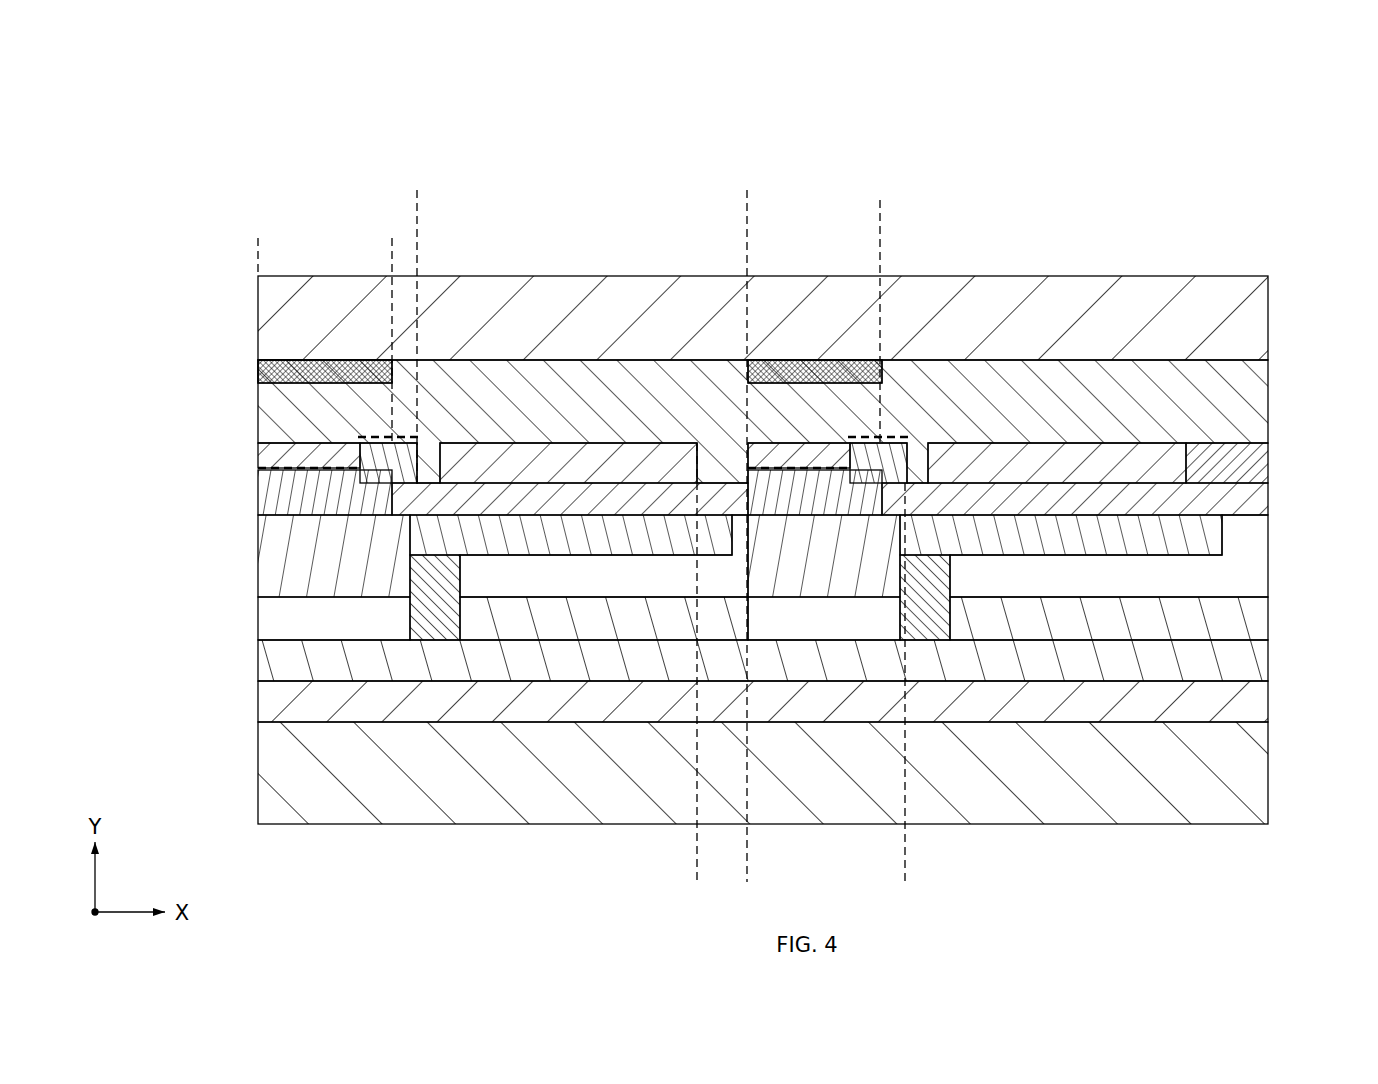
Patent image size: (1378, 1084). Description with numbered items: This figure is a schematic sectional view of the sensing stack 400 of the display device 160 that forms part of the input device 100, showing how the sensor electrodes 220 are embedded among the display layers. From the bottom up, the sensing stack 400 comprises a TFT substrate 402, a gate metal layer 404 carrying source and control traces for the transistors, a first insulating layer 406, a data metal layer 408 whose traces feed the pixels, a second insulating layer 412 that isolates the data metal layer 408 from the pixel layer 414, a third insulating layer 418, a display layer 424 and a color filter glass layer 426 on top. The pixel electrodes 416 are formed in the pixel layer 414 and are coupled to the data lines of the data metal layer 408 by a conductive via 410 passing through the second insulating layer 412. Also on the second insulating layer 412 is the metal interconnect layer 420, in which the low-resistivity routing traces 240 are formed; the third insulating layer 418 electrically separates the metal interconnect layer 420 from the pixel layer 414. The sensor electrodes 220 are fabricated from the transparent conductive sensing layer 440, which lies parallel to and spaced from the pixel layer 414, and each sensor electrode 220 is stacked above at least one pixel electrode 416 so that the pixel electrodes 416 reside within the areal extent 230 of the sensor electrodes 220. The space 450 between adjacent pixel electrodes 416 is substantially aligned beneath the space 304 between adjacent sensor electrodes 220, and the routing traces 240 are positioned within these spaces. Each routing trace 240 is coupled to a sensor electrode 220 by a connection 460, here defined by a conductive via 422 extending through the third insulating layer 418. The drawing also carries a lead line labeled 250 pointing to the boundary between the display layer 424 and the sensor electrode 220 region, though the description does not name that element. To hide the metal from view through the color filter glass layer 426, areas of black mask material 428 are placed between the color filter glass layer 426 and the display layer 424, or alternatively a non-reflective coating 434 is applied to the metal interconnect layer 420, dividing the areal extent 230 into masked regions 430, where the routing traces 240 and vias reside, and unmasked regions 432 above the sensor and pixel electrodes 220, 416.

The input device 100 is at (148, 165).
The display device 160 is at (1198, 163).
The routing traces 240 is at (372, 138).
The areal extent 230 is at (417, 197).
The unmasked regions 432 is at (747, 229).
The masked regions 430 is at (258, 245).
The interface 250 is at (1131, 443).
The sensing stack 400 is at (172, 320).
The color filter glass layer 426 is at (1262, 319).
The black mask material 428 is at (262, 372).
The display layer 424 is at (1262, 386).
The non-reflective coating 434 is at (270, 455).
The conductive via 422 is at (368, 440).
The connection 460 is at (418, 482).
The conductive sensing layer 440 is at (1178, 460).
The metal interconnect layer 420 is at (260, 484).
The sensor electrodes 220 is at (557, 474).
The third insulating layer 418 is at (1262, 482).
The pixel layer 414 is at (408, 537).
The conductive via 410 is at (437, 578).
The pixel electrodes 416 is at (560, 547).
The second insulating layer 412 is at (1262, 548).
The data metal layer 408 is at (272, 618).
The first insulating layer 406 is at (1262, 636).
The gate metal layer 404 is at (264, 696).
The TFT substrate 402 is at (270, 776).
The space 450 is at (905, 844).
The space 304 is at (697, 875).